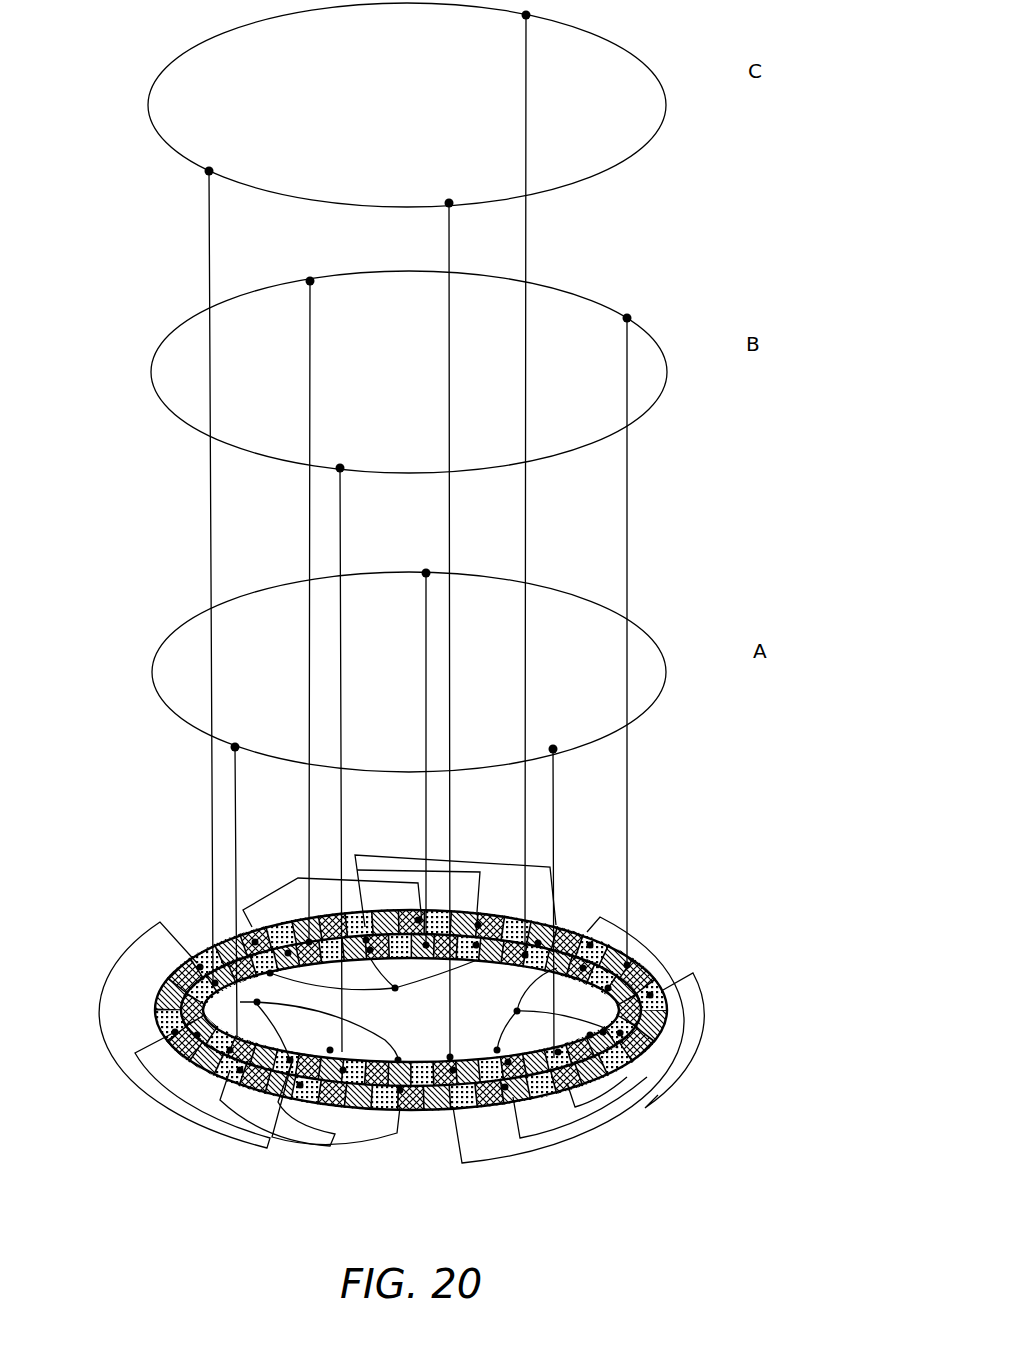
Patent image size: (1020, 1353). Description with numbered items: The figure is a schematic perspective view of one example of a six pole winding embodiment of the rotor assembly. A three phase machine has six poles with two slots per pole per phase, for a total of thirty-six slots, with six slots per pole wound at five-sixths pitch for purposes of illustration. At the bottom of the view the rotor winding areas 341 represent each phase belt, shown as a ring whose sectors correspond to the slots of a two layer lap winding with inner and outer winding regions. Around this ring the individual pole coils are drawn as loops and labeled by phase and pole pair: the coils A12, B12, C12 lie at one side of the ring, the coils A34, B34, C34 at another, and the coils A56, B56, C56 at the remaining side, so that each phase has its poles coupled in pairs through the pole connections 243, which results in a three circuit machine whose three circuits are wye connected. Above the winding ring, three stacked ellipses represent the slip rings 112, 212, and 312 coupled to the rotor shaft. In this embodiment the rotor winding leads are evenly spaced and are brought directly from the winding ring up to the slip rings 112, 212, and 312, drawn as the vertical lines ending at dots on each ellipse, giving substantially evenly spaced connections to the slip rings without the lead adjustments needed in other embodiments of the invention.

The slip ring 312 is at (647, 67).
The slip ring 212 is at (647, 330).
The slip ring 112 is at (648, 638).
The rotor winding areas 341 is at (205, 929).
The pole connections 243 is at (640, 984).
The coil A12 is at (288, 889).
The coil B12 is at (345, 868).
The coil C12 is at (405, 852).
The coil A34 is at (685, 946).
The coil B34 is at (705, 1008).
The coil C34 is at (625, 1112).
The coil A56 is at (388, 1134).
The coil B56 is at (320, 1138).
The coil C56 is at (207, 1133).